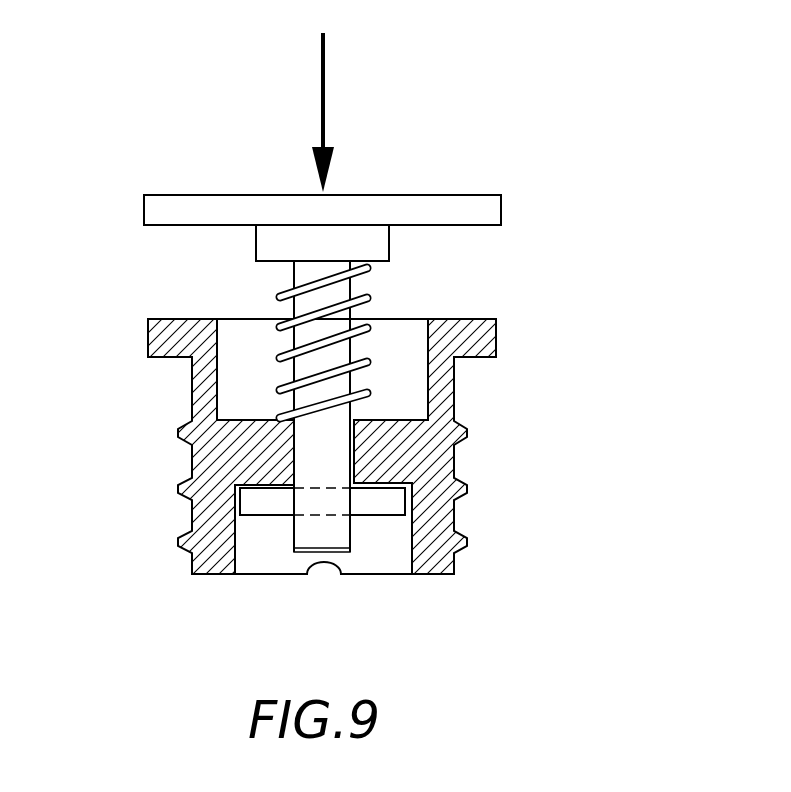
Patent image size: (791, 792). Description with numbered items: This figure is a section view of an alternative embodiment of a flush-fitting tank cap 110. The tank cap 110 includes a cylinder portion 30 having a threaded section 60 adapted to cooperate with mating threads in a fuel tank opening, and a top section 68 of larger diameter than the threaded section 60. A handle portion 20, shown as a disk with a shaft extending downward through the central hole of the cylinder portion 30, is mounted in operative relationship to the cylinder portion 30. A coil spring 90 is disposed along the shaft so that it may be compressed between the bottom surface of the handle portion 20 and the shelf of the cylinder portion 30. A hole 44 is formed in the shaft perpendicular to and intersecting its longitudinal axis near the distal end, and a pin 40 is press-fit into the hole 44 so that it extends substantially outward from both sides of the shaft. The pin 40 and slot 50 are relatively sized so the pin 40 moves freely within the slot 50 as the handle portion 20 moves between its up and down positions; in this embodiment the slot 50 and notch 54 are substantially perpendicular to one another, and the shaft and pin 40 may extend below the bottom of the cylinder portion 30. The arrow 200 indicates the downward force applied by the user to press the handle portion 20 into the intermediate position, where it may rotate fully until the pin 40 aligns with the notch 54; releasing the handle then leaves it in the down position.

The arrow 200 is at (321, 100).
The tank cap 110 is at (610, 160).
The handle portion 20 is at (390, 177).
The spring 90 is at (369, 297).
The top section 68 is at (496, 336).
The cylinder portion 30 is at (157, 425).
The threaded section 60 is at (467, 480).
The slot 50 is at (392, 547).
The pin 40 is at (278, 508).
The hole 44 is at (315, 503).
The notch 54 is at (320, 571).